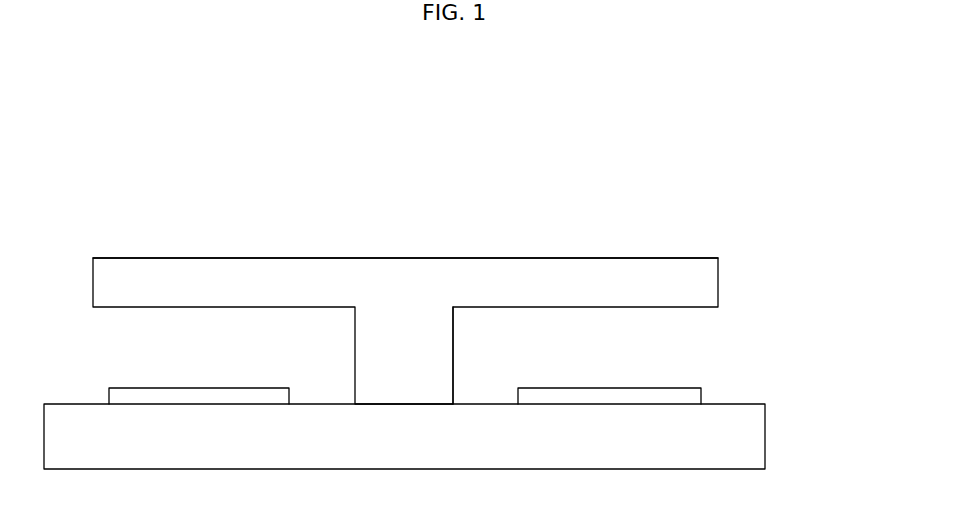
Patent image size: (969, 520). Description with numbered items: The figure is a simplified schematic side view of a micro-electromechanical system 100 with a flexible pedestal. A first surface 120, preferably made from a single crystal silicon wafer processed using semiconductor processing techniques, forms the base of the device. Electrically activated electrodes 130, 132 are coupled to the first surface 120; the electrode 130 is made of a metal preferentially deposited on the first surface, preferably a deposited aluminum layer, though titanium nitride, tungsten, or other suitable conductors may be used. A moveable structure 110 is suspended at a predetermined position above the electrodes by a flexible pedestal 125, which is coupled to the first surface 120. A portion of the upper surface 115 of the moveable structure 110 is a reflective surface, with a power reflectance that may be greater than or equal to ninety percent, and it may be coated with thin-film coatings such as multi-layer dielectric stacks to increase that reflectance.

The test structure / probe assembly 100 is at (614, 129).
The moveable structure 110 is at (693, 283).
The upper surface 115 is at (208, 258).
The first surface 120 is at (722, 447).
The flexible pedestal 125 is at (410, 355).
The electrically activated electrode 130 is at (197, 397).
The electrically activated electrode 132 is at (607, 396).